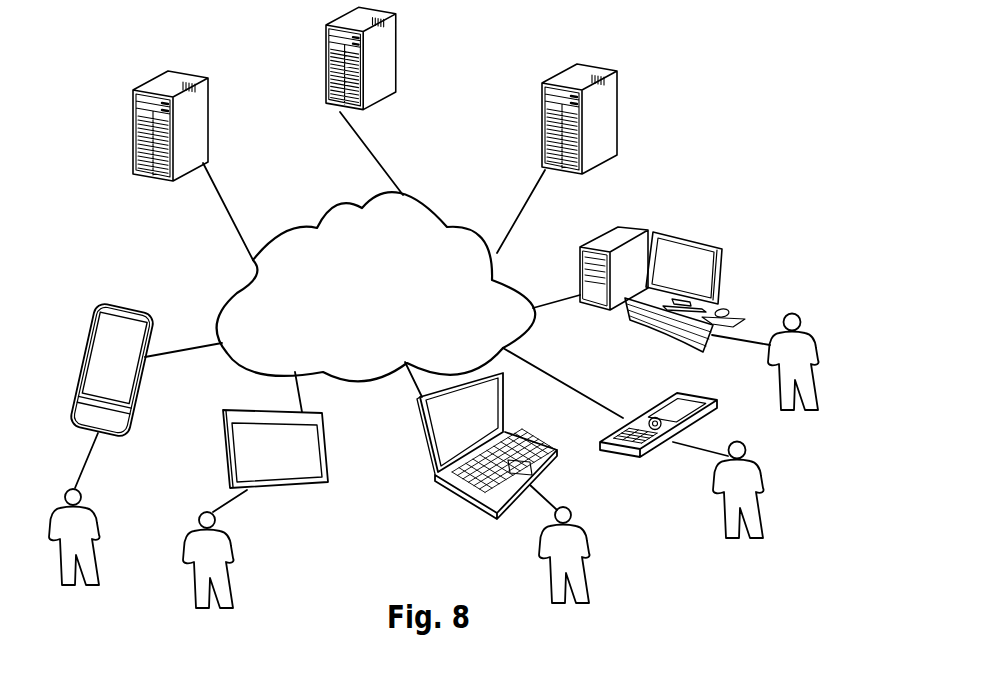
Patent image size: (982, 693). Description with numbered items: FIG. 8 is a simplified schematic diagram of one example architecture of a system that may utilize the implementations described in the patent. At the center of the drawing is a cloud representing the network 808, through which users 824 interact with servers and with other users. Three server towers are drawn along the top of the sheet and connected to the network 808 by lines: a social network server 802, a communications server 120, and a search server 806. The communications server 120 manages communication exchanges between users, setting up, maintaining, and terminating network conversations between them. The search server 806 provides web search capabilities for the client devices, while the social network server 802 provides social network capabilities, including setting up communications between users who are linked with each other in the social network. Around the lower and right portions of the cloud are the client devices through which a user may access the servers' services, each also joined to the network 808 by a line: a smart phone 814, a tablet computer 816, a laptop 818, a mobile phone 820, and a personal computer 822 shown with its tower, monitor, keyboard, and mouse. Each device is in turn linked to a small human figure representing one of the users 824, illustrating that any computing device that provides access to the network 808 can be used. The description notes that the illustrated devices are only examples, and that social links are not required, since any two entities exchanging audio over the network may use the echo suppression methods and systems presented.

The communications server 120 is at (335, 86).
The social network server 802 is at (142, 157).
The search server 806 is at (607, 137).
The network 808 is at (245, 307).
The smart phone 814 is at (99, 338).
The tablet computer 816 is at (249, 450).
The laptop 818 is at (480, 418).
The mobile phone 820 is at (678, 412).
The personal computer 822 is at (695, 265).
The users 824 is at (85, 527).